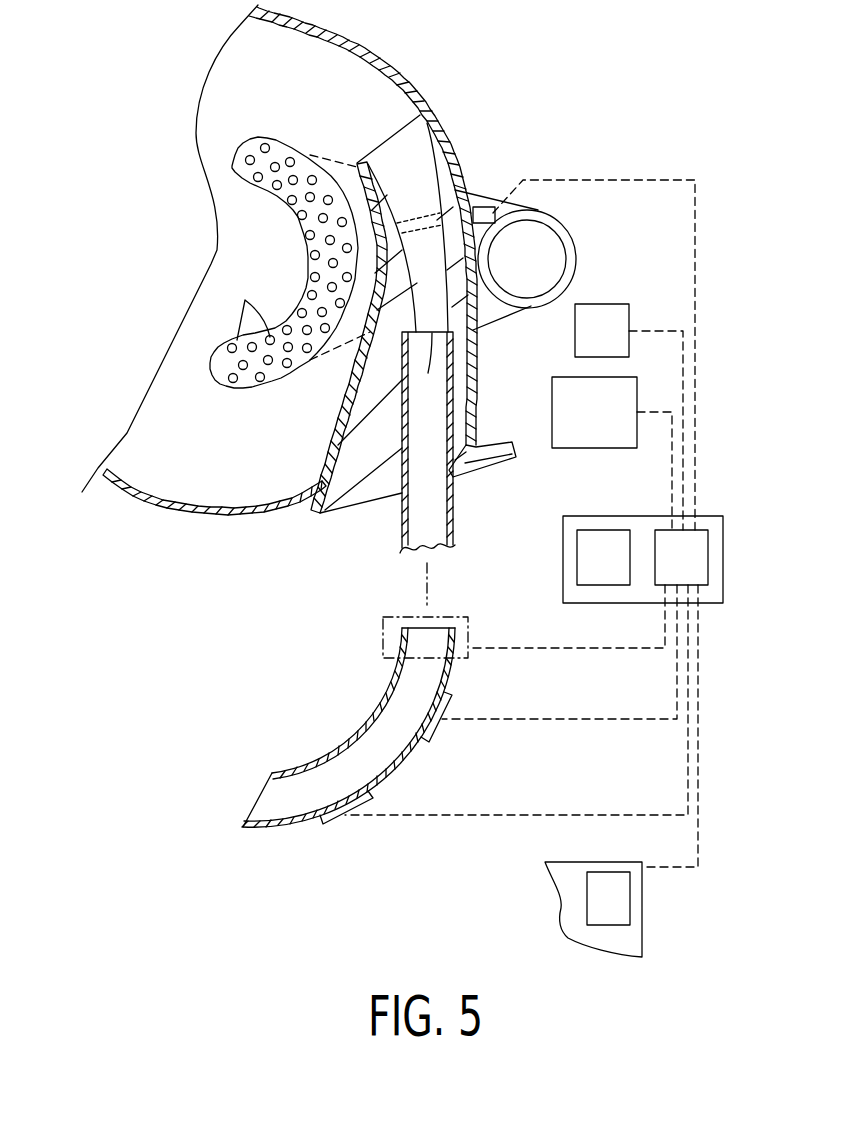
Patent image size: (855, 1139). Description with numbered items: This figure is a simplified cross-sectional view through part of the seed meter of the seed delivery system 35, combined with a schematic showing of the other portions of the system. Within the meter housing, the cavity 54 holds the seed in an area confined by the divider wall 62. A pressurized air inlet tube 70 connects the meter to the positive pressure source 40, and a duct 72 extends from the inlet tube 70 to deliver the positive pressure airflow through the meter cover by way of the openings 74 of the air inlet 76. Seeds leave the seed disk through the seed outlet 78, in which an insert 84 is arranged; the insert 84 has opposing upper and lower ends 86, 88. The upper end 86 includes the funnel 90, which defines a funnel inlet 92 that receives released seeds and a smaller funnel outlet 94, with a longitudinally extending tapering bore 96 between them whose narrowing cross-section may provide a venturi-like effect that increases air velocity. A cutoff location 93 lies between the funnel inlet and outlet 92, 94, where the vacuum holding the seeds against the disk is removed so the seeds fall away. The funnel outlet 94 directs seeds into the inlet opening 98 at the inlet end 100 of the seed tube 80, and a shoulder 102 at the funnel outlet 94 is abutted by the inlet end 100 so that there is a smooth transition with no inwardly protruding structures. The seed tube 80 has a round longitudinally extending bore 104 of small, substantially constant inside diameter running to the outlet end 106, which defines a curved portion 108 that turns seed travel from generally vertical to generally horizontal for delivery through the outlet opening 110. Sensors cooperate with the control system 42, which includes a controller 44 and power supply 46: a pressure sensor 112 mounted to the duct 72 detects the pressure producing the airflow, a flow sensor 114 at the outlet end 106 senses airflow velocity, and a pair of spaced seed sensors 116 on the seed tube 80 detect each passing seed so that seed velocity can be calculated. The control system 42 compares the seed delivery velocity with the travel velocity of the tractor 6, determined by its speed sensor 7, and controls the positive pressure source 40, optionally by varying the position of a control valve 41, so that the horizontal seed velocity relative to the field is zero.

The tractor 6 is at (572, 873).
The speed sensor 7 is at (601, 912).
The seed delivery system 35 is at (152, 248).
The positive pressure source 40 is at (581, 426).
The control valve 41 is at (589, 345).
The control system 42 is at (712, 516).
The controller 44 is at (668, 572).
The power supply 46 is at (590, 572).
The cavity 54 is at (143, 443).
The divider wall 62 is at (344, 410).
The pressurized air inlet tube 70 is at (529, 308).
The duct 72 is at (337, 175).
The openings 74 is at (252, 305).
The air inlet 76 is at (237, 404).
The seed outlet 78 is at (320, 523).
The seed tube 80 is at (360, 660).
The insert 84 is at (360, 428).
The upper end 86 is at (415, 193).
The lower end 88 is at (333, 470).
The funnel 90 is at (448, 212).
The funnel inlet 92 is at (387, 141).
The cutoff location 93 is at (410, 233).
The funnel outlet 94 is at (425, 295).
The tapering bore 96 is at (438, 116).
The inlet opening 98 is at (427, 442).
The inlet end 100 is at (464, 387).
The shoulder 102 is at (400, 333).
The longitudinally extending bore 104 is at (420, 503).
The outlet end 106 is at (352, 707).
The curved portion 108 is at (343, 740).
The outlet opening 110 is at (255, 798).
The pressure sensor 112 is at (477, 208).
The flow sensor 114 is at (470, 642).
The seed sensors 116 is at (433, 727).